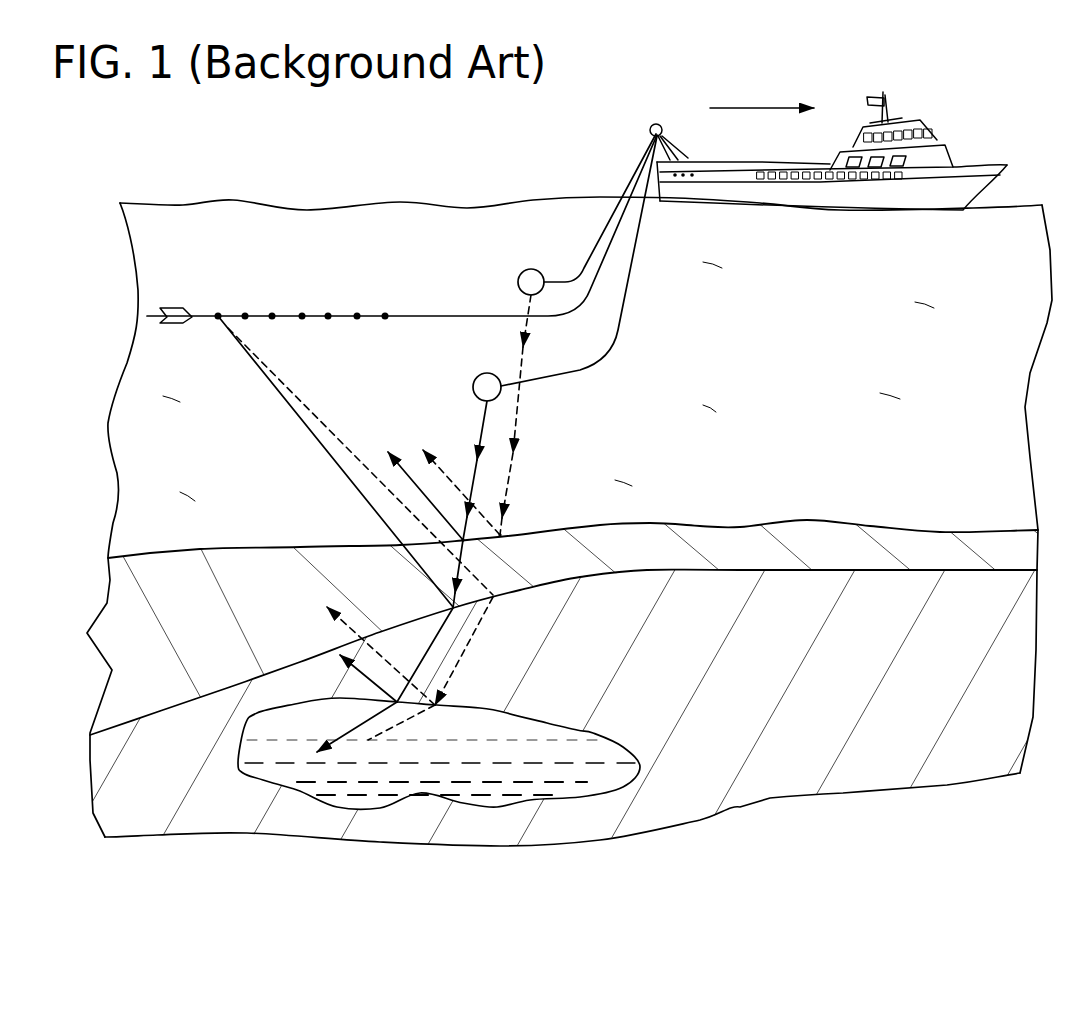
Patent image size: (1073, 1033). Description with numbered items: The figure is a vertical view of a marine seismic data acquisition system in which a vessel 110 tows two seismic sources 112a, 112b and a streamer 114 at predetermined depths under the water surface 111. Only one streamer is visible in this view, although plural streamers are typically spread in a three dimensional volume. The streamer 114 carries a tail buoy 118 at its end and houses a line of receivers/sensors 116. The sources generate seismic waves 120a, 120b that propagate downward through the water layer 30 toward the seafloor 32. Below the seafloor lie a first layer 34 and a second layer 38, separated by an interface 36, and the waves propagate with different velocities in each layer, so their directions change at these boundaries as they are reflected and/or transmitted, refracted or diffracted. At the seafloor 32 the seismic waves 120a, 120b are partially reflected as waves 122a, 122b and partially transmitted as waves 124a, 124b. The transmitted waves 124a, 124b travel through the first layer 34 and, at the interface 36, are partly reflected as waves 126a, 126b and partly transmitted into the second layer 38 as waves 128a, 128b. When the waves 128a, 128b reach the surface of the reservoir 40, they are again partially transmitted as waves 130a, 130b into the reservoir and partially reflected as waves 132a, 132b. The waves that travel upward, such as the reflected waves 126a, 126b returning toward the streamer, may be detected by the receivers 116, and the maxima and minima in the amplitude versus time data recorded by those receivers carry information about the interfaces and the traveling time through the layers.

The water layer 30 is at (815, 344).
The seafloor 32 is at (818, 532).
The first layer 34 is at (875, 549).
The interface 36 is at (803, 575).
The second layer 38 is at (853, 636).
The reservoir 40 is at (585, 767).
The vessel 110 is at (987, 154).
The water surface 111 is at (218, 203).
The seismic source 112a is at (518, 282).
The seismic source 112b is at (477, 378).
The streamer 114 is at (376, 302).
The receivers/sensors 116 is at (219, 313).
The tail buoy 118 is at (178, 308).
The seismic wave 120a is at (518, 416).
The seismic wave 120b is at (478, 425).
The reflected wave 122a is at (447, 470).
The reflected wave 122b is at (404, 466).
The transmitted wave 124a is at (506, 544).
The transmitted wave 124b is at (462, 553).
The reflected wave 126a is at (333, 433).
The reflected wave 126b is at (316, 440).
The transmitted wave 128a is at (476, 633).
The transmitted wave 128b is at (442, 626).
The transmitted wave 130a is at (403, 733).
The transmitted wave 130b is at (360, 727).
The reflected wave 132a is at (355, 628).
The reflected wave 132b is at (392, 692).